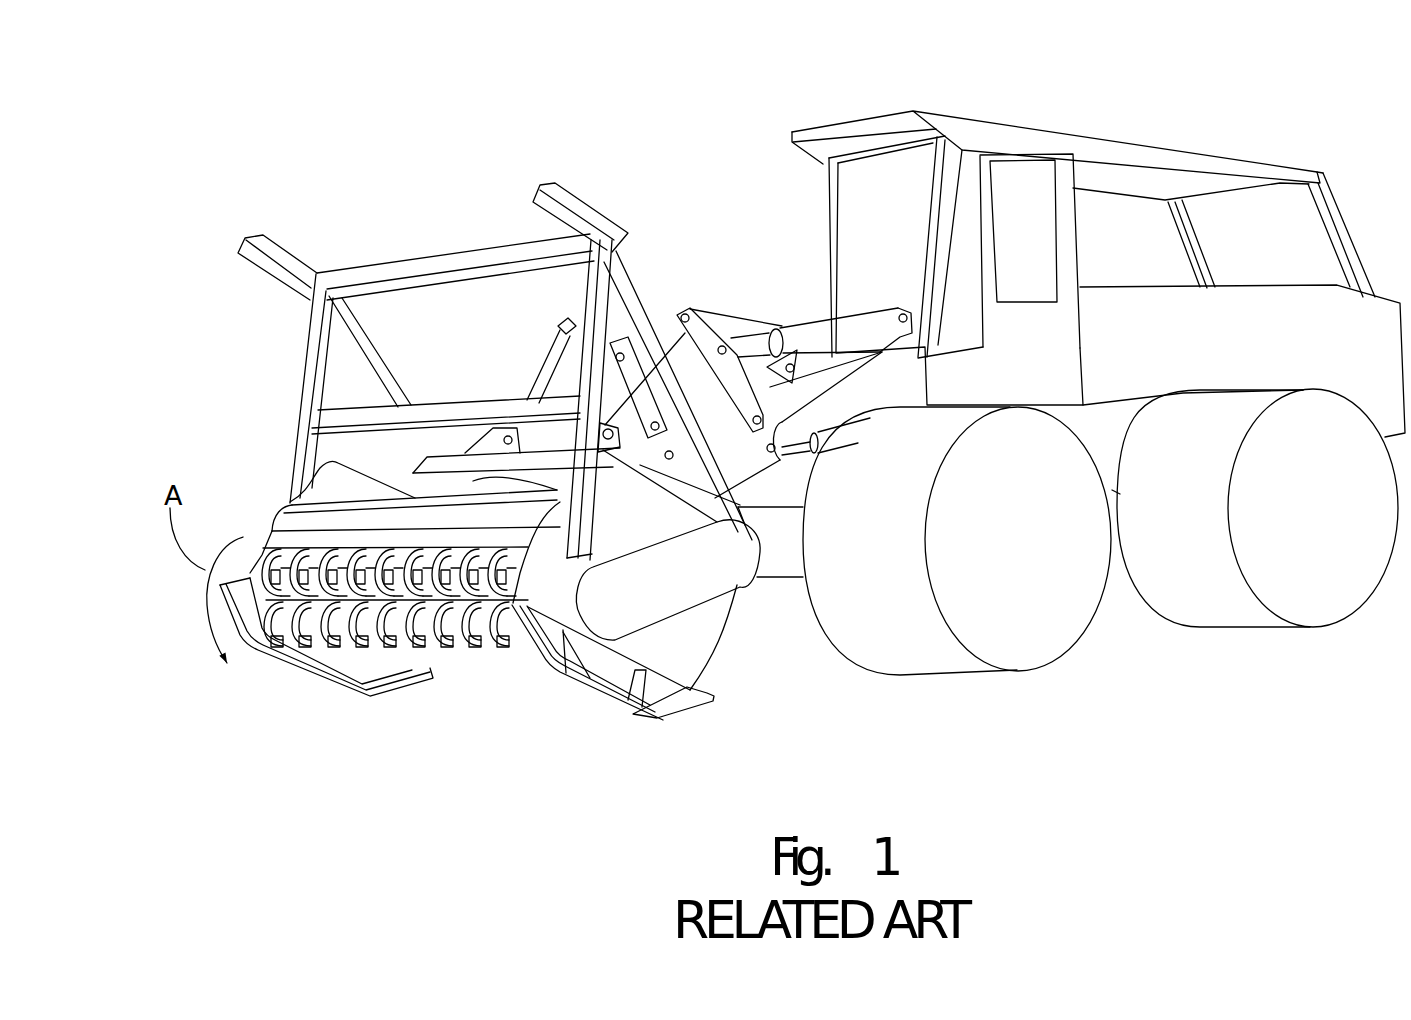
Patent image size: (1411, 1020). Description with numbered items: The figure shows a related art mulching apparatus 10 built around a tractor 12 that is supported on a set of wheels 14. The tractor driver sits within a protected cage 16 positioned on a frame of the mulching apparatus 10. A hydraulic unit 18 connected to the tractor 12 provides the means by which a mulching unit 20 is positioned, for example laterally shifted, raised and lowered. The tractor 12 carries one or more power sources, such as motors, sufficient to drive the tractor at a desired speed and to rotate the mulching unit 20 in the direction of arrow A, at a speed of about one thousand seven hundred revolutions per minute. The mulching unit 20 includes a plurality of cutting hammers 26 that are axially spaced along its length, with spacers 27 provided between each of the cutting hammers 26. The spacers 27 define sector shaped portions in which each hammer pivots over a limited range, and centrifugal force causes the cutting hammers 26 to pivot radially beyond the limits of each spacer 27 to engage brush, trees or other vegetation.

The mulching apparatus 10 is at (887, 728).
The tractor 12 is at (1160, 130).
The wheels 14 is at (1085, 668).
The protected cage 16 is at (972, 130).
The hydraulic unit 18 is at (750, 328).
The mulching unit 20 is at (553, 767).
The cutting hammers 26 is at (467, 648).
The spacers 27 is at (298, 618).